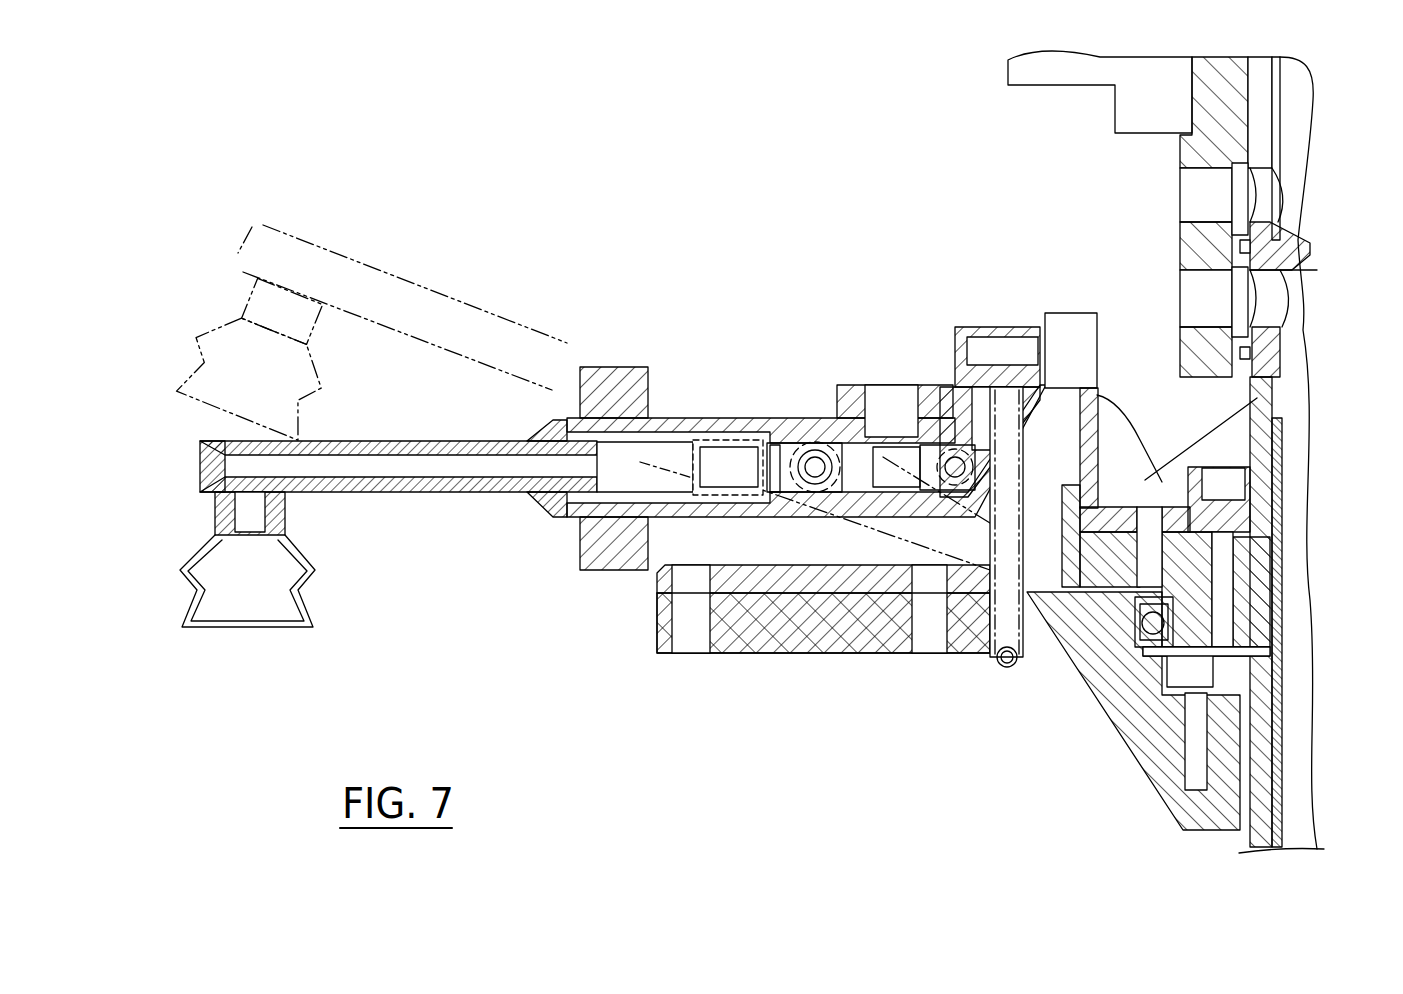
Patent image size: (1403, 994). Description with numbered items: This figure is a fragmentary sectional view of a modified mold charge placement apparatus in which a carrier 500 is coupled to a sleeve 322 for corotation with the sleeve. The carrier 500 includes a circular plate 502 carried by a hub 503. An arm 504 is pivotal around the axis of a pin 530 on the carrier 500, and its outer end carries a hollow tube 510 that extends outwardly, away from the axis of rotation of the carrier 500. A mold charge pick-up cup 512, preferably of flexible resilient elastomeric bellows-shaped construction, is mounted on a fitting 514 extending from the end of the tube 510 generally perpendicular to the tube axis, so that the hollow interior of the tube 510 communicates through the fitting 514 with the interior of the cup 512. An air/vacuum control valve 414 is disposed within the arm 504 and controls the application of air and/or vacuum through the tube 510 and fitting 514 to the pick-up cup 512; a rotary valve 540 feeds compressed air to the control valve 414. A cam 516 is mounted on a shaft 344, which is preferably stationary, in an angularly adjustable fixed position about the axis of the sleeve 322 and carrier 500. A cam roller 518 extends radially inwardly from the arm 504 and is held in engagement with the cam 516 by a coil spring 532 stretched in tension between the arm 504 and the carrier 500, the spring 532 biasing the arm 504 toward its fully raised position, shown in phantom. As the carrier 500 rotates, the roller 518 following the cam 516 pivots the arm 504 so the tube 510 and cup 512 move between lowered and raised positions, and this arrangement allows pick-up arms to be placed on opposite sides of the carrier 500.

The sleeve 322 is at (1258, 775).
The shaft 344 is at (1280, 709).
The air/vacuum control valve 414 is at (780, 430).
The carrier 500 is at (755, 658).
The circular plate 502 is at (823, 640).
The hub 503 is at (1126, 762).
The arm 504 is at (745, 524).
The hollow tube 510 is at (418, 495).
The mold charge pick-up cup 512 is at (194, 592).
The fitting 514 is at (222, 502).
The cam 516 is at (1152, 440).
The cam roller 518 is at (1071, 325).
The pin 530 is at (807, 427).
The coil spring 532 is at (976, 640).
The rotary valve 540 is at (1170, 155).